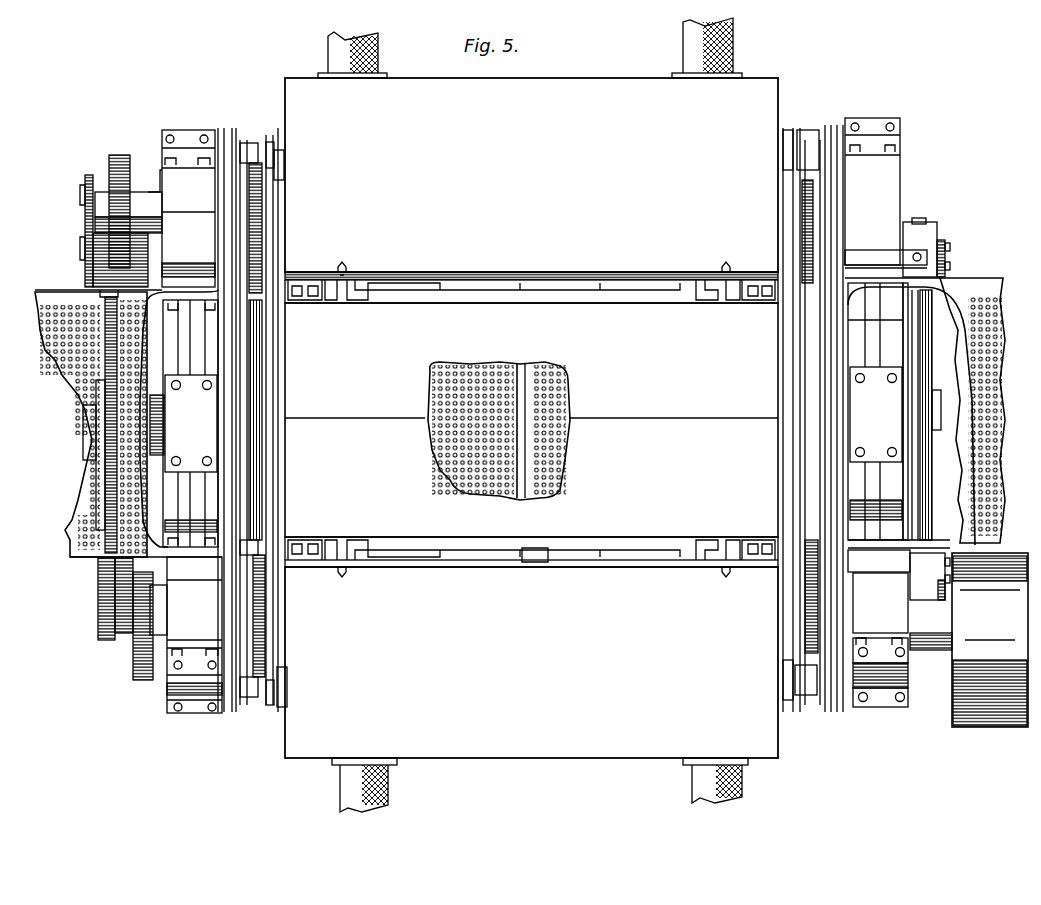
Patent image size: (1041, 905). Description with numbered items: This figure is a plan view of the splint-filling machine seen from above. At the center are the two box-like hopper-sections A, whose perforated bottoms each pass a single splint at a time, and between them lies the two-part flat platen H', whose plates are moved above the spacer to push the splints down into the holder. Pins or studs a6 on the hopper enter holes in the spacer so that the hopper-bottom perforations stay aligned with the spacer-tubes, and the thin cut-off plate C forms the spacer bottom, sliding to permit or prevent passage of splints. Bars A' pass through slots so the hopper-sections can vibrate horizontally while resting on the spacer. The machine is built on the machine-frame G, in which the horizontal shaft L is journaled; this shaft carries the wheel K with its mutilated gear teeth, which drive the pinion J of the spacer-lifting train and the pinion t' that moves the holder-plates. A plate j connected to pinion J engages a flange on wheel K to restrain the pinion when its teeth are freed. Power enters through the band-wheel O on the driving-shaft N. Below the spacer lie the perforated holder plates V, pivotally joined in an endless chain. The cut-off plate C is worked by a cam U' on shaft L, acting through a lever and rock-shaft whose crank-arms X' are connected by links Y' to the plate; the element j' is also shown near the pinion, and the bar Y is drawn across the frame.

The hopper-section A is at (531, 418).
The bar A' is at (530, 411).
The pinion J is at (133, 170).
The plate j is at (72, 231).
The gear wheel j' is at (98, 260).
The perforated plate V is at (72, 366).
The horizontal shaft L is at (83, 428).
The machine-frame G is at (557, 415).
The wheel K is at (97, 572).
The pinion t' is at (128, 628).
The plate C is at (436, 380).
The two-part flat platen H' is at (531, 420).
The cross bar Y is at (531, 419).
The pin or stud a6 is at (343, 268).
The crank-arm X' is at (914, 419).
The link Y' is at (947, 420).
The cam U' is at (939, 415).
The driving-shaft N is at (944, 634).
The band-wheel O is at (990, 640).